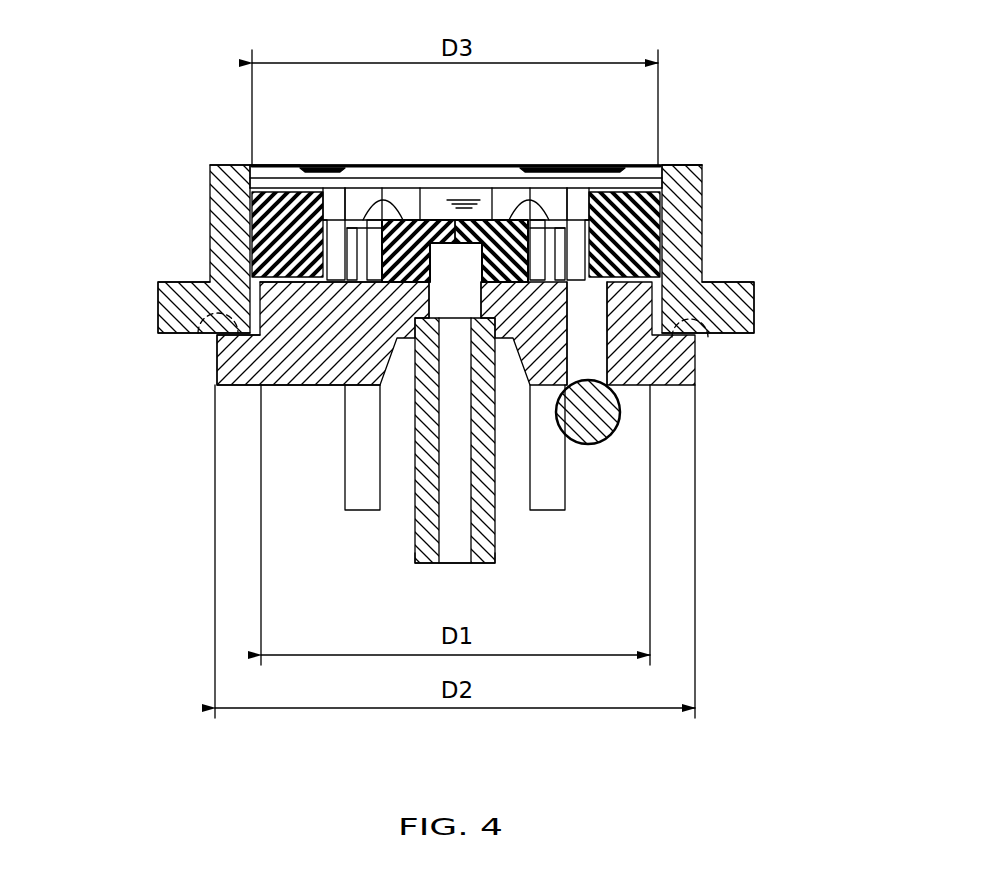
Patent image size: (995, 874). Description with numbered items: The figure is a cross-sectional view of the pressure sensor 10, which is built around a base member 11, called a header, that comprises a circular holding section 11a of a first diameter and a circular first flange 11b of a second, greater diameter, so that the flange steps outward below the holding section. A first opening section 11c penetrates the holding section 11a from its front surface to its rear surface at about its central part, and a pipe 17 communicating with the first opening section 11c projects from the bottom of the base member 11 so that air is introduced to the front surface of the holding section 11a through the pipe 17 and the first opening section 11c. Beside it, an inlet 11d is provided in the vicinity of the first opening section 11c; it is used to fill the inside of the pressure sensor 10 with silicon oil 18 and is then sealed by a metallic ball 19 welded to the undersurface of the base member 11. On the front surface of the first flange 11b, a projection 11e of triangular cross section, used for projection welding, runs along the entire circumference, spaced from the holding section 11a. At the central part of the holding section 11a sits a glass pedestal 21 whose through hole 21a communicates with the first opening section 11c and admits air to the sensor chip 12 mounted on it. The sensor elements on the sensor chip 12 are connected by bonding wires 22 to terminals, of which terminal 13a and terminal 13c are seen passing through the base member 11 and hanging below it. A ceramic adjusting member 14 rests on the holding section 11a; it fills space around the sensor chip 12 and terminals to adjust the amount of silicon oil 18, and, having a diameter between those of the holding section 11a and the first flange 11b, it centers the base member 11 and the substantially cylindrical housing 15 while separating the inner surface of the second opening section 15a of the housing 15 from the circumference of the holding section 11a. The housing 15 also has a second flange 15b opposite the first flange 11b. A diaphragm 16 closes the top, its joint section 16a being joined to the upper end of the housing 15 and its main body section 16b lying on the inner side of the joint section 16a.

The pressure sensor 10 is at (770, 101).
The base member 11 is at (320, 390).
The holding section 11a is at (288, 278).
The first flange 11b is at (222, 370).
The first opening section 11c is at (462, 300).
The inlet 11d is at (602, 322).
The projection 11e is at (200, 333).
The sensor chip 12 is at (488, 200).
The terminal 13a is at (355, 493).
The terminal 13c is at (550, 496).
The adjusting member 14 is at (252, 220).
The housing 15 is at (703, 207).
The second opening section 15a is at (267, 170).
The second flange 15b is at (166, 310).
The diaphragm 16 is at (433, 172).
The joint section 16a is at (688, 165).
The main body section 16b is at (635, 165).
The pipe 17 is at (483, 553).
The silicon oil 18 is at (463, 196).
The metallic ball 19 is at (589, 428).
The pedestal 21 is at (545, 262).
The through hole 21a is at (447, 284).
The bonding wire 22 is at (373, 196).